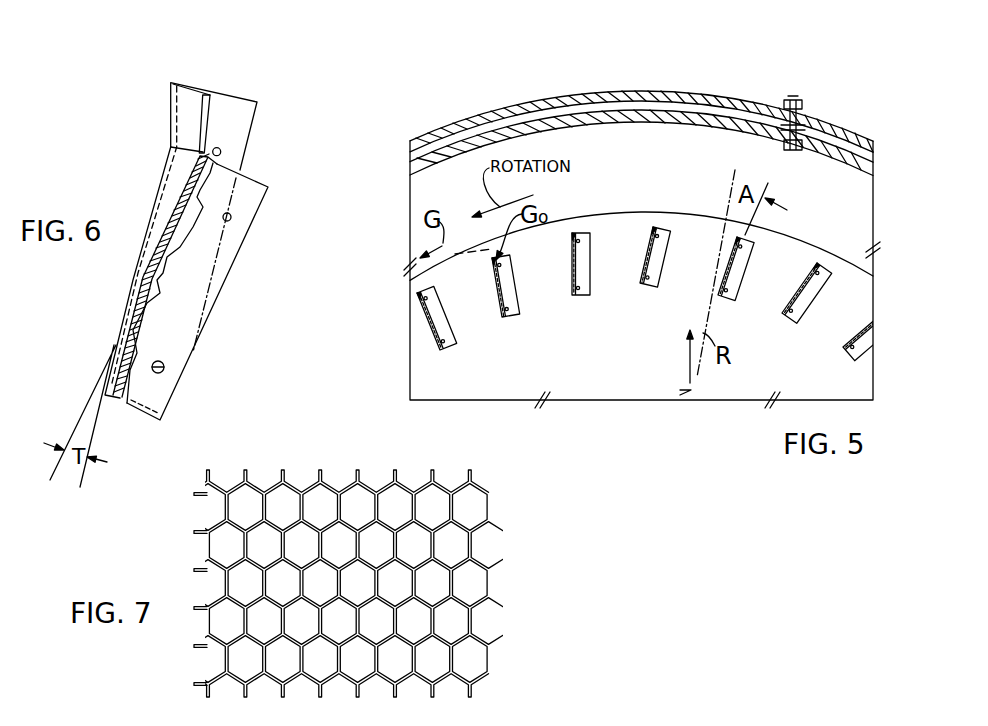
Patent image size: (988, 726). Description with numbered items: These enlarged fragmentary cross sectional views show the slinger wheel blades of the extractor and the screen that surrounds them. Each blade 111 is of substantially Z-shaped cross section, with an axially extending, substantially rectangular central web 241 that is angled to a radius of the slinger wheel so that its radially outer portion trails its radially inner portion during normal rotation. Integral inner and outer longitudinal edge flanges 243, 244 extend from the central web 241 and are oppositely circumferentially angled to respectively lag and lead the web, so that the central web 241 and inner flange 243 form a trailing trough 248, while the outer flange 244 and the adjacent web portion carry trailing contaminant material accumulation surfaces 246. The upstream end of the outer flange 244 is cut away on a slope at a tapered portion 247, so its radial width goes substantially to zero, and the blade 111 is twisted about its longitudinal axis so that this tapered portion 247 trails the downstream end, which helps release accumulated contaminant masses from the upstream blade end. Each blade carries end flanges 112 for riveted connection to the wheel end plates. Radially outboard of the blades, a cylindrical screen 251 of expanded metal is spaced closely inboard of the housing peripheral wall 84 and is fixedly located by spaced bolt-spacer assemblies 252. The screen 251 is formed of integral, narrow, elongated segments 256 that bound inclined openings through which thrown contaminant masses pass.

In FIG. 5, the housing peripheral wall 84 is at (682, 95).
In FIG. 6, the blade 111 is at (113, 106).
In FIG. 5, the blade 111 is at (647, 217).
In FIG. 6, the end flange 112 is at (232, 235).
In FIG. 5, the end flange 112 is at (648, 295).
In FIG. 6, the central web 241 is at (170, 188).
In FIG. 5, the central web 241 is at (648, 262).
In FIG. 6, the inner longitudinal edge flange 243 is at (113, 353).
In FIG. 5, the inner longitudinal edge flange 243 is at (646, 283).
In FIG. 6, the outer longitudinal edge flange 244 is at (182, 120).
In FIG. 5, the contaminant material accumulation surface 246 is at (732, 186).
In FIG. 6, the tapered portion 247 is at (210, 113).
In FIG. 6, the trailing trough 248 is at (133, 332).
In FIG. 5, the trailing trough 248 is at (647, 273).
In FIG. 7, the trailing trough 248 is at (402, 508).
In FIG. 5, the screen 251 is at (707, 108).
In FIG. 7, the screen 251 is at (318, 460).
In FIG. 5, the bolt-spacer assembly 252 is at (808, 130).
In FIG. 7, the segment 256 is at (407, 485).